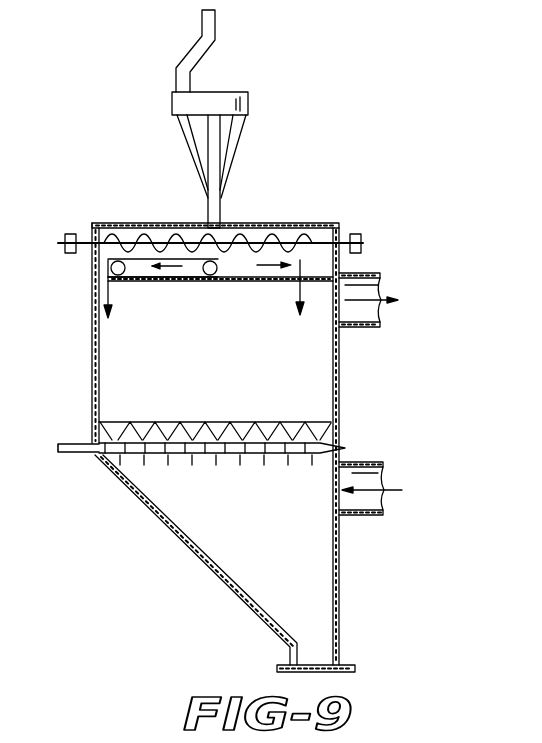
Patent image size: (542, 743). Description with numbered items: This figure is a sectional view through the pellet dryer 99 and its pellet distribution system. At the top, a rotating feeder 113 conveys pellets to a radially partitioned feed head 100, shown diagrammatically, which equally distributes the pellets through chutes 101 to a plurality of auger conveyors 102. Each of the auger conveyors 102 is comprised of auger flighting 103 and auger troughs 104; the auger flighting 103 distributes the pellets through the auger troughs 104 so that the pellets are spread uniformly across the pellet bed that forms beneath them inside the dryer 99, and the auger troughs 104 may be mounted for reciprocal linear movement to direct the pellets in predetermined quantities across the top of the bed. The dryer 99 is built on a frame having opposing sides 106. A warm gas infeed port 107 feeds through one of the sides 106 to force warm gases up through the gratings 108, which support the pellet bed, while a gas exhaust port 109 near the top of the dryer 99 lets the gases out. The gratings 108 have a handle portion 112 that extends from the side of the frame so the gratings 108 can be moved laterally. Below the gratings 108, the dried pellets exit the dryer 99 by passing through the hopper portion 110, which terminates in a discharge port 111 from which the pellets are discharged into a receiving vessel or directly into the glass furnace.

The dryer 99 is at (340, 203).
The radially partitioned feed head 100 is at (249, 97).
The chutes 101 is at (179, 144).
The auger conveyors 102 is at (362, 243).
The auger flighting 103 is at (152, 226).
The auger troughs 104 is at (140, 262).
The sides 106 is at (92, 366).
The warm gas infeed port 107 is at (385, 505).
The gratings 108 is at (163, 470).
The gas exhaust port 109 is at (382, 318).
The hopper portion 110 is at (201, 567).
The discharge port 111 is at (319, 673).
The handle portion 112 is at (70, 455).
The rotating feeder 113 is at (213, 34).